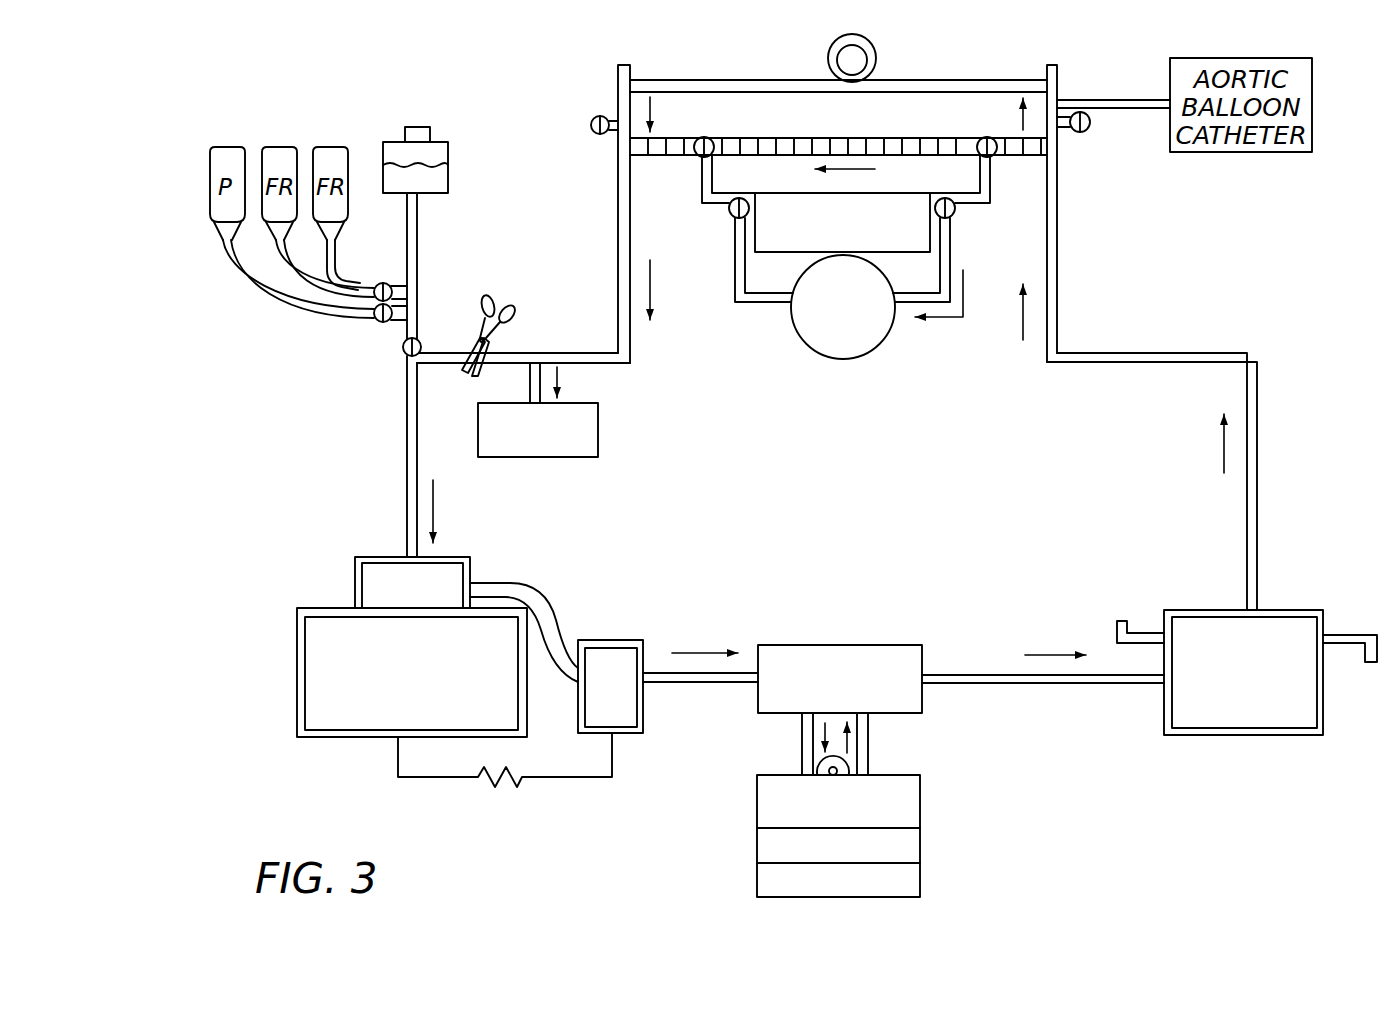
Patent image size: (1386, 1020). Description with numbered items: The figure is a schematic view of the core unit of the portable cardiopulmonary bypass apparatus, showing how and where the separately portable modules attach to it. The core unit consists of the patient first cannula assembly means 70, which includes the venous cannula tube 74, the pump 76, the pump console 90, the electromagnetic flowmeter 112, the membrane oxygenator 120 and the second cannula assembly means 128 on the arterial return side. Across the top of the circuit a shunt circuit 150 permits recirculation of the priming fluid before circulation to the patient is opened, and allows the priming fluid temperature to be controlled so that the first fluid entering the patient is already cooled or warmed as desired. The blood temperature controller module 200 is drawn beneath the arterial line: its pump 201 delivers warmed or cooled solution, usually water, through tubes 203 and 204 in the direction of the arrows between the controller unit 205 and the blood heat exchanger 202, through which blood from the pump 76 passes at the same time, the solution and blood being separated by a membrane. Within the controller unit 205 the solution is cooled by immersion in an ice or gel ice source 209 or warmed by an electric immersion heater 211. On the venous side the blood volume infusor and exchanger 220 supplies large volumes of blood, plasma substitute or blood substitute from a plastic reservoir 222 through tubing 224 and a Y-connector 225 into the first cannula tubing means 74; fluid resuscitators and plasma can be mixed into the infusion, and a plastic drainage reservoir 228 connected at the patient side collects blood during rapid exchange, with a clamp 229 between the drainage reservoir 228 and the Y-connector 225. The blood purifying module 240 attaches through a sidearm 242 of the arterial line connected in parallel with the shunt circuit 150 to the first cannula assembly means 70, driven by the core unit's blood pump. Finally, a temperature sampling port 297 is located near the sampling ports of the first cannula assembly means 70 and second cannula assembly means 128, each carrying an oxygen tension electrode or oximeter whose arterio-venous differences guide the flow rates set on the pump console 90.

The first cannula assembly means 70 is at (604, 85).
The cannula tube 74 is at (617, 102).
The pump 76 is at (374, 574).
The pump console 90 is at (318, 686).
The electromagnetic flowmeter 112 is at (622, 655).
The membrane oxygenator 120 is at (1210, 724).
The second cannula assembly means 128 is at (1112, 351).
The shunt circuit 150 is at (909, 137).
The blood temperature controller module 200 is at (936, 706).
The pump 201 is at (848, 765).
The blood heat exchanger 202 is at (878, 642).
The tube 203 is at (802, 745).
The tube 204 is at (870, 740).
The controller unit 205 is at (924, 808).
The cooling source 209 is at (913, 853).
The electric immersion heater 211 is at (910, 882).
The blood volume infusor and exchanger 220 is at (431, 126).
The reservoir 222 is at (395, 158).
The tubing 224 is at (414, 243).
The Y-connector 225 is at (402, 353).
The drainage reservoir 228 is at (587, 435).
The clamp 229 is at (503, 287).
The blood purifying module 240 is at (967, 215).
The sidearm 242 is at (716, 209).
The temperature sampling port 297 is at (596, 135).